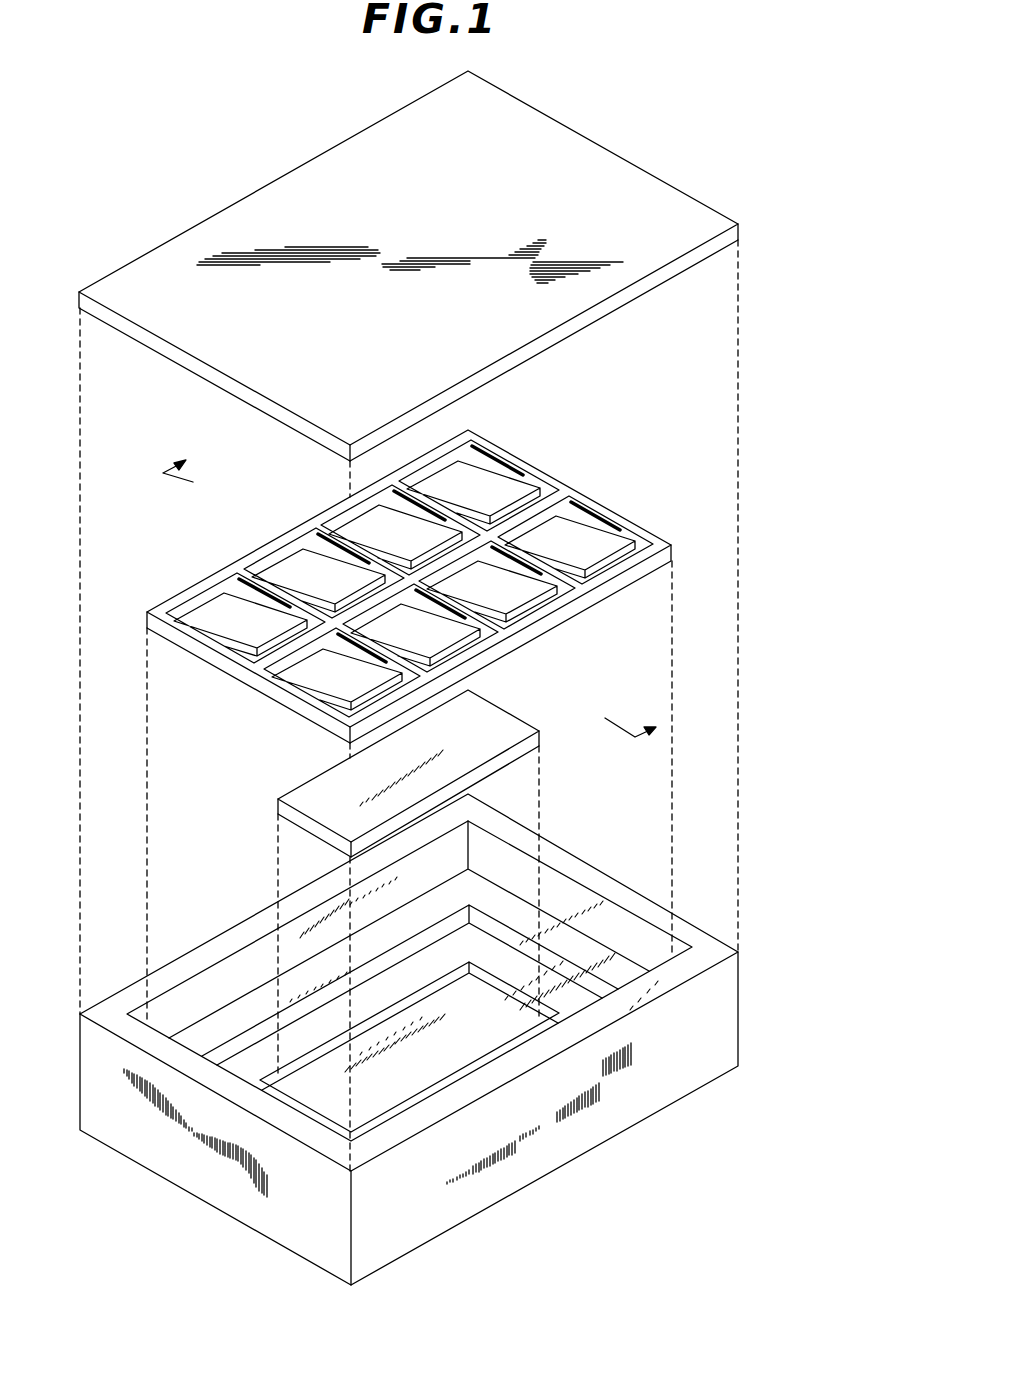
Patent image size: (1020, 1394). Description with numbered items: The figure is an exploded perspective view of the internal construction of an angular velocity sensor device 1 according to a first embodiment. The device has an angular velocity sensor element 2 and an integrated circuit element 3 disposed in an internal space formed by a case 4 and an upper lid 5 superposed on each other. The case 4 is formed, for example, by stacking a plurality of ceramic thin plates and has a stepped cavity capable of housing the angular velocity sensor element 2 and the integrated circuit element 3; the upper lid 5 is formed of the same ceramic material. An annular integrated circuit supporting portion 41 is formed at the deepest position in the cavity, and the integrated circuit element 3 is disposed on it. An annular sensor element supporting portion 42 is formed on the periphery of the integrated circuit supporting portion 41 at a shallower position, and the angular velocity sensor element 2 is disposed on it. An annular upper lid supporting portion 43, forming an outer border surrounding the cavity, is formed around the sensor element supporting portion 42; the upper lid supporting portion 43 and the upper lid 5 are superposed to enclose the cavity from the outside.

The angular velocity sensor device 1 is at (603, 131).
The angular velocity sensor element 2 is at (614, 505).
The integrated circuit element 3 is at (486, 721).
The case 4 is at (450, 1044).
The upper lid 5 is at (537, 318).
The integrated circuit supporting portion 41 is at (455, 1038).
The sensor element supporting portion 42 is at (301, 996).
The upper lid supporting portion 43 is at (322, 1128).